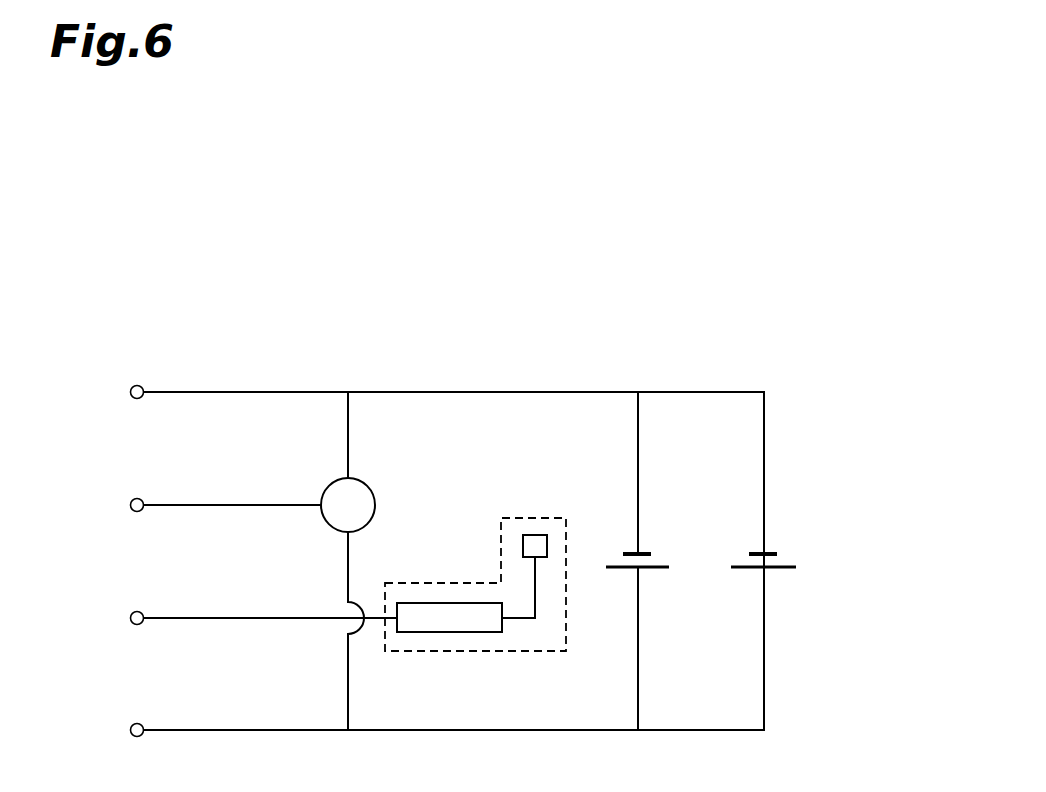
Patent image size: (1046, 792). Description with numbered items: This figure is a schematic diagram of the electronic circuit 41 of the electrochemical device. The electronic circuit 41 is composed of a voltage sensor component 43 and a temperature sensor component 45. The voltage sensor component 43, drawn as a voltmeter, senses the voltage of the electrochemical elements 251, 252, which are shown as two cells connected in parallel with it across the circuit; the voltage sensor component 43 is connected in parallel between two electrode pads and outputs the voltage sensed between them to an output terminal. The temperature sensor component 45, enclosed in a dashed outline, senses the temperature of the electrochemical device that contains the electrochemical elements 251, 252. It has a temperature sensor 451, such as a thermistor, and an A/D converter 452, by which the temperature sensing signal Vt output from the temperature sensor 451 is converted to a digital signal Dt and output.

The electronic circuit 41 is at (788, 365).
The voltage sensor component 43 is at (375, 500).
The temperature sensor component 45 is at (535, 519).
The temperature sensor 451 is at (533, 548).
The A/D converter 452 is at (455, 622).
The electrochemical element 251 is at (643, 550).
The electrochemical element 252 is at (770, 548).